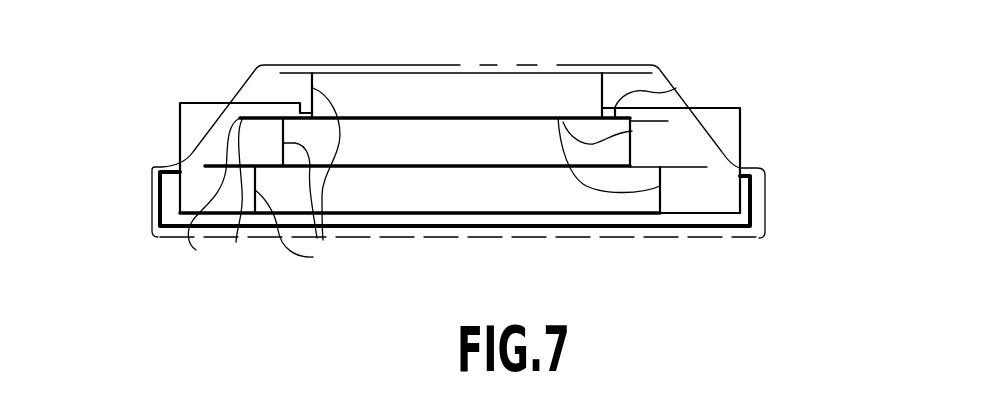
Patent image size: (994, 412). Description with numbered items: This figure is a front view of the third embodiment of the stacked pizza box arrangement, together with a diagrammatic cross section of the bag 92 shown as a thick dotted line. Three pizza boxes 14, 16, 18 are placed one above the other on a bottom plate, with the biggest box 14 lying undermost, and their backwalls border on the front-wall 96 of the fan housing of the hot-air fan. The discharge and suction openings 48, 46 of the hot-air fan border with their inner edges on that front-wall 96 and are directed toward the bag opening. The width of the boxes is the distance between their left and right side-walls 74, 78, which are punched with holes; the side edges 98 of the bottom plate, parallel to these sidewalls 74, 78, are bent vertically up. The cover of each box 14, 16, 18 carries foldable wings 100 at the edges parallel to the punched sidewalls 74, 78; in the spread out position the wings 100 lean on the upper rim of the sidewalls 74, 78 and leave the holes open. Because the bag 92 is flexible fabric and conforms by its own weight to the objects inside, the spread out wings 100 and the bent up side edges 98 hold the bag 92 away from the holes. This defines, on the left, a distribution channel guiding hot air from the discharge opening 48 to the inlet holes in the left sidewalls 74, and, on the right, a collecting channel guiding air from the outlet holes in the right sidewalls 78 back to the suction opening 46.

The pizza box 14 is at (451, 203).
The pizza box 16 is at (451, 157).
The pizza box 18 is at (451, 110).
The suction opening 46 is at (718, 108).
The discharge opening 48 is at (193, 112).
The left sidewall 74 is at (303, 180).
The right sidewall 78 is at (602, 91).
The bag 92 is at (370, 64).
The front-wall 96 is at (673, 90).
The side edges 98 is at (152, 168).
The foldable wings 100 is at (280, 73).